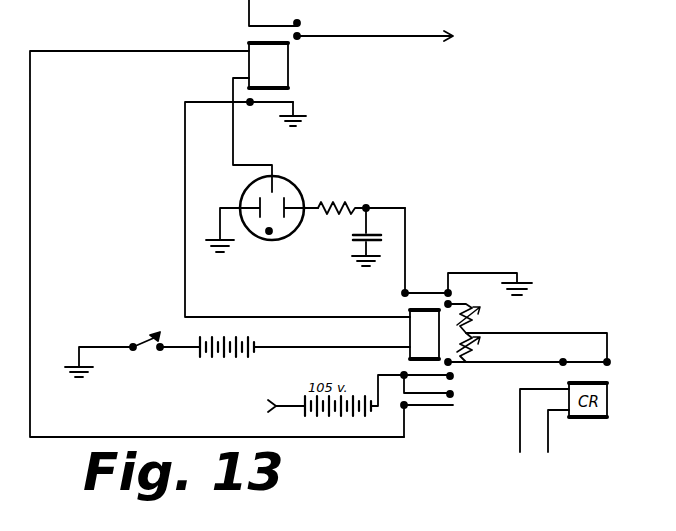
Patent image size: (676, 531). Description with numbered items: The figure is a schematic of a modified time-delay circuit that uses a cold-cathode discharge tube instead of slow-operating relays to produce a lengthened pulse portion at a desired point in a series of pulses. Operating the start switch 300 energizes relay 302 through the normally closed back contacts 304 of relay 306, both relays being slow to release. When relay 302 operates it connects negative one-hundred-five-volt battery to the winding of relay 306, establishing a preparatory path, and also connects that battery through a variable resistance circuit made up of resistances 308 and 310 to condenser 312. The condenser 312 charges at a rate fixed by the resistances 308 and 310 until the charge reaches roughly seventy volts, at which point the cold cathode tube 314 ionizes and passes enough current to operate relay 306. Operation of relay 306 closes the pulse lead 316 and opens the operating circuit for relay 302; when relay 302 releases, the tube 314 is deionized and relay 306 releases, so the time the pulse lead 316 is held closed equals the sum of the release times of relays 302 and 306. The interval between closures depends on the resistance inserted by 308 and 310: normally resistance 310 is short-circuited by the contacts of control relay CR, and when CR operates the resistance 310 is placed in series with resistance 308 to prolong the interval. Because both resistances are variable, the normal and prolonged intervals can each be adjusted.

The start switch 300 is at (147, 343).
The relay 302 is at (410, 332).
The normally closed back contacts 304 is at (275, 104).
The relay 306 is at (282, 77).
The resistance 308 is at (527, 333).
The resistance 310 is at (526, 349).
The condenser 312 is at (358, 241).
The cold cathode tube 314 is at (290, 194).
The pulse lead 316 is at (427, 15).